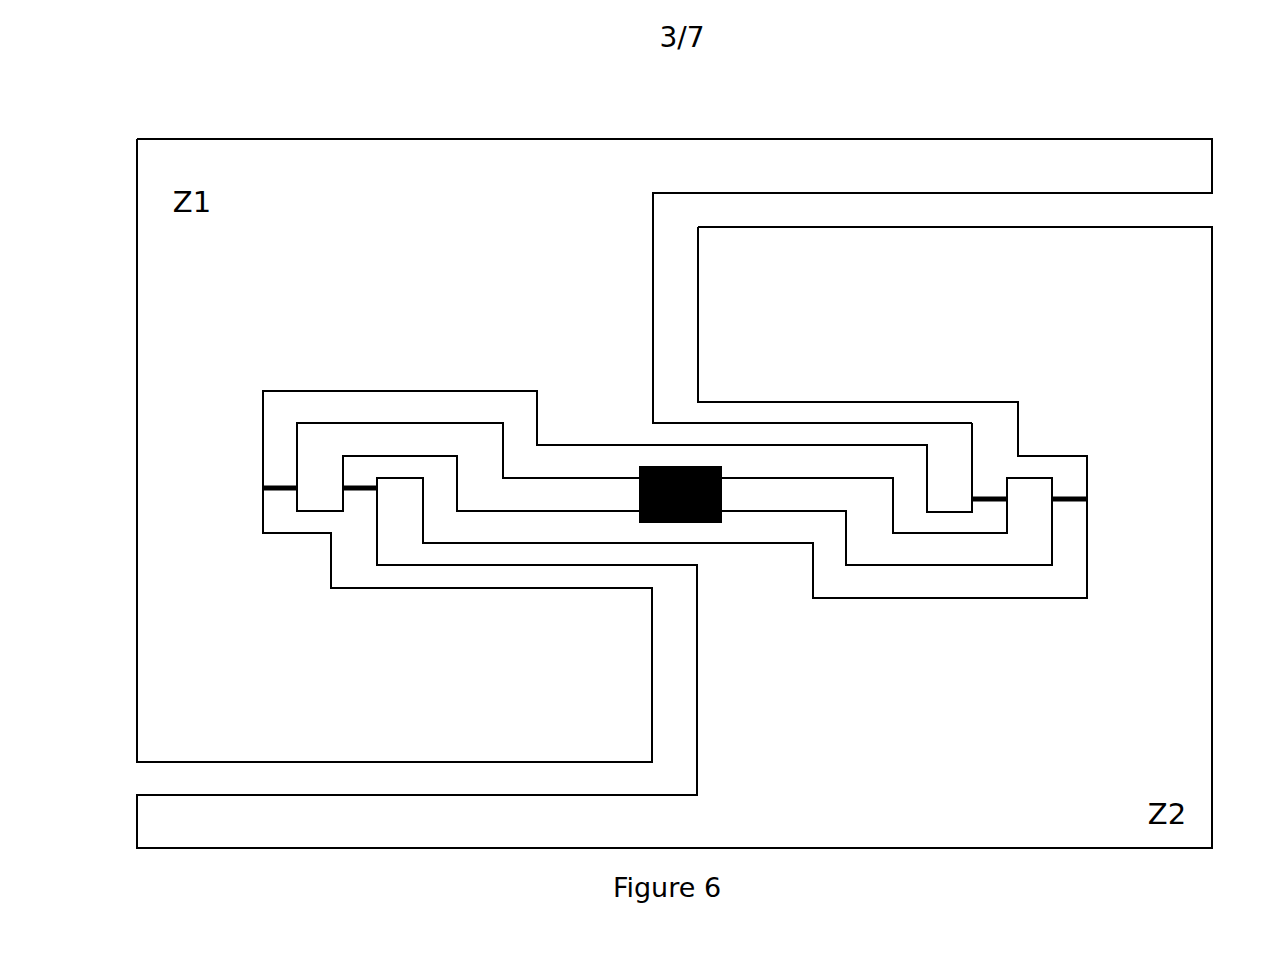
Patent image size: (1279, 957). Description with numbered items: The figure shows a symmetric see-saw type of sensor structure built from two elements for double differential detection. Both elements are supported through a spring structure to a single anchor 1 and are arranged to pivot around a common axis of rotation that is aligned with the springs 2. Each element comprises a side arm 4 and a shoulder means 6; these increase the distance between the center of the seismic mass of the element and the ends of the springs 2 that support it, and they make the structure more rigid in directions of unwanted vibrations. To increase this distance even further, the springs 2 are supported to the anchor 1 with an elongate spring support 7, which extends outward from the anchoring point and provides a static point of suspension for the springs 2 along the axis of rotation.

The anchor 1 is at (716, 533).
The springs 2 is at (376, 504).
The side arm 4 is at (878, 412).
The shoulder means 6 is at (948, 446).
The elongate spring support 7 is at (512, 478).